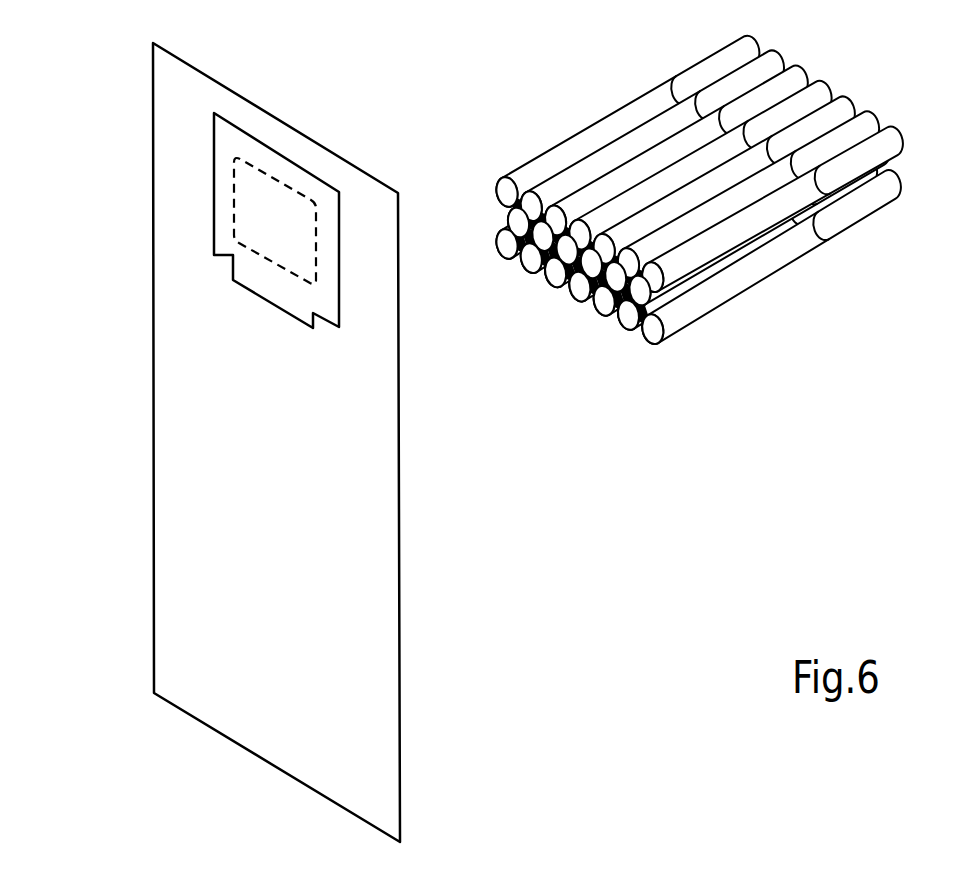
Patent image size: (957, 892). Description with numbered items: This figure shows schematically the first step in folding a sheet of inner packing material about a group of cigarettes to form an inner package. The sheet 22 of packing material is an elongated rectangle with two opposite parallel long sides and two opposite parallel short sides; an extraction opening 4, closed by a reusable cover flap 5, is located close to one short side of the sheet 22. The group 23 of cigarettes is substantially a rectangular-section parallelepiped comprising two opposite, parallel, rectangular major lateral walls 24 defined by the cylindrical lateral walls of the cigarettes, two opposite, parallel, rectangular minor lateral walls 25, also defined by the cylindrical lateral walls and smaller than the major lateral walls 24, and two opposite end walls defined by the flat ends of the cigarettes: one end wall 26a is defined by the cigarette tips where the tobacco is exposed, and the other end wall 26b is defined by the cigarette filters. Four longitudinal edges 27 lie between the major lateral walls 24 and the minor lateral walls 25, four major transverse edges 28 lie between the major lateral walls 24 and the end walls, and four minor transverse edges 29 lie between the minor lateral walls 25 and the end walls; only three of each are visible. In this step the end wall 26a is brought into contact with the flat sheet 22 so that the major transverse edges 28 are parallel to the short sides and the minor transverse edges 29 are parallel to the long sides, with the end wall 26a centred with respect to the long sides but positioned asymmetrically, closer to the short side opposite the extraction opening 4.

The extraction opening 4 is at (259, 188).
The reusable cover flap 5 is at (332, 307).
The sheet of packing material 22 is at (125, 358).
The group of cigarettes 23 is at (672, 208).
The major lateral walls 24 is at (655, 148).
The minor lateral walls 25 is at (803, 247).
The end wall 26a is at (566, 258).
The end wall 26b is at (872, 93).
The longitudinal edges 27 is at (553, 153).
The major transverse edges 28 is at (533, 272).
The minor transverse edges 29 is at (496, 243).